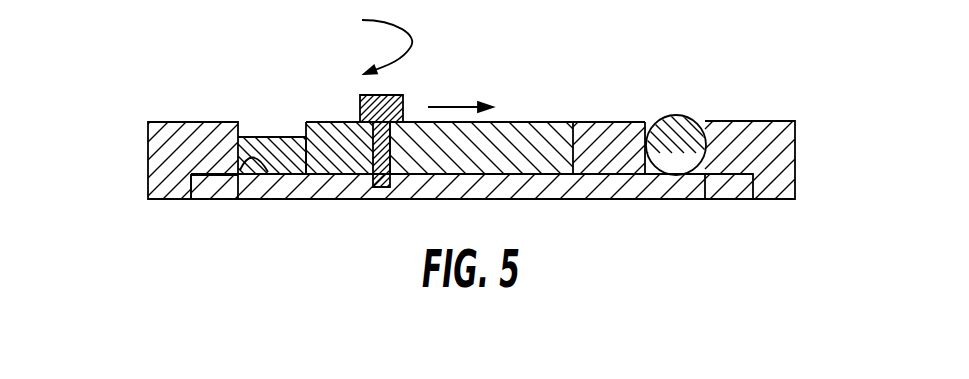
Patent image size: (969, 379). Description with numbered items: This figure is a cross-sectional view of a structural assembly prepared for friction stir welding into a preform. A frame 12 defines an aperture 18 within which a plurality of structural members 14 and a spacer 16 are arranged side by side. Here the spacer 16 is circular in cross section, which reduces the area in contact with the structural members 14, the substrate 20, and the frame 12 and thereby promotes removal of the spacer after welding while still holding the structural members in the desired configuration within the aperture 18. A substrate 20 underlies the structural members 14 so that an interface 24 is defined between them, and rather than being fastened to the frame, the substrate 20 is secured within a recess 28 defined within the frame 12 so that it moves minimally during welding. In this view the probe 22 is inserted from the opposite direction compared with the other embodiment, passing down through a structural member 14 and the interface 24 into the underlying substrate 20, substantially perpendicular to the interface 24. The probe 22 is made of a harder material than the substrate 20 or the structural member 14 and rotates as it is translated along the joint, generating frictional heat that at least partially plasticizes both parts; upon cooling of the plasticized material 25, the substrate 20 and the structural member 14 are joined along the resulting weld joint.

The frame 12 is at (202, 122).
The structural member 14 is at (605, 135).
The spacer 16 is at (675, 128).
The aperture 18 is at (264, 176).
The substrate 20 is at (660, 182).
The probe 22 is at (403, 95).
The interface 24 is at (273, 152).
The plasticized material 25 is at (338, 130).
The recess 28 is at (193, 183).